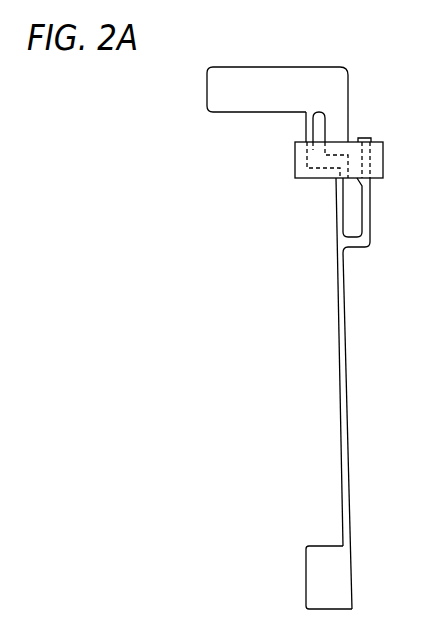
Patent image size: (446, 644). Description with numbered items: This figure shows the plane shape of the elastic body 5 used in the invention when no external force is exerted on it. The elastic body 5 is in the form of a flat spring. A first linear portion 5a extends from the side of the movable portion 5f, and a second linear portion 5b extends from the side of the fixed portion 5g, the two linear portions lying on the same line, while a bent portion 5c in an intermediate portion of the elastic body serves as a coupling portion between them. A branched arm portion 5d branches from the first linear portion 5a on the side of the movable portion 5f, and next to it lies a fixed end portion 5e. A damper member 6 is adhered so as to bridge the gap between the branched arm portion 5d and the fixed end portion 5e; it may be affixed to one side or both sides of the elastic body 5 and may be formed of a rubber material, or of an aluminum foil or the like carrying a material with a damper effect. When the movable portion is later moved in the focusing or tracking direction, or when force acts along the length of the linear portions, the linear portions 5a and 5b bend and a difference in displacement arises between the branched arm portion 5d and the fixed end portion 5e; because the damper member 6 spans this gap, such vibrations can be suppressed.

The elastic body 5 is at (321, 331).
The first linear portion 5a is at (350, 432).
The second linear portion 5b is at (306, 133).
The bent portion 5c is at (316, 168).
The branched arm portion 5d is at (371, 202).
The fixed end portion 5e is at (335, 122).
The movable portion 5f is at (337, 568).
The fixed portion 5g is at (301, 83).
The damper member 6 is at (377, 155).